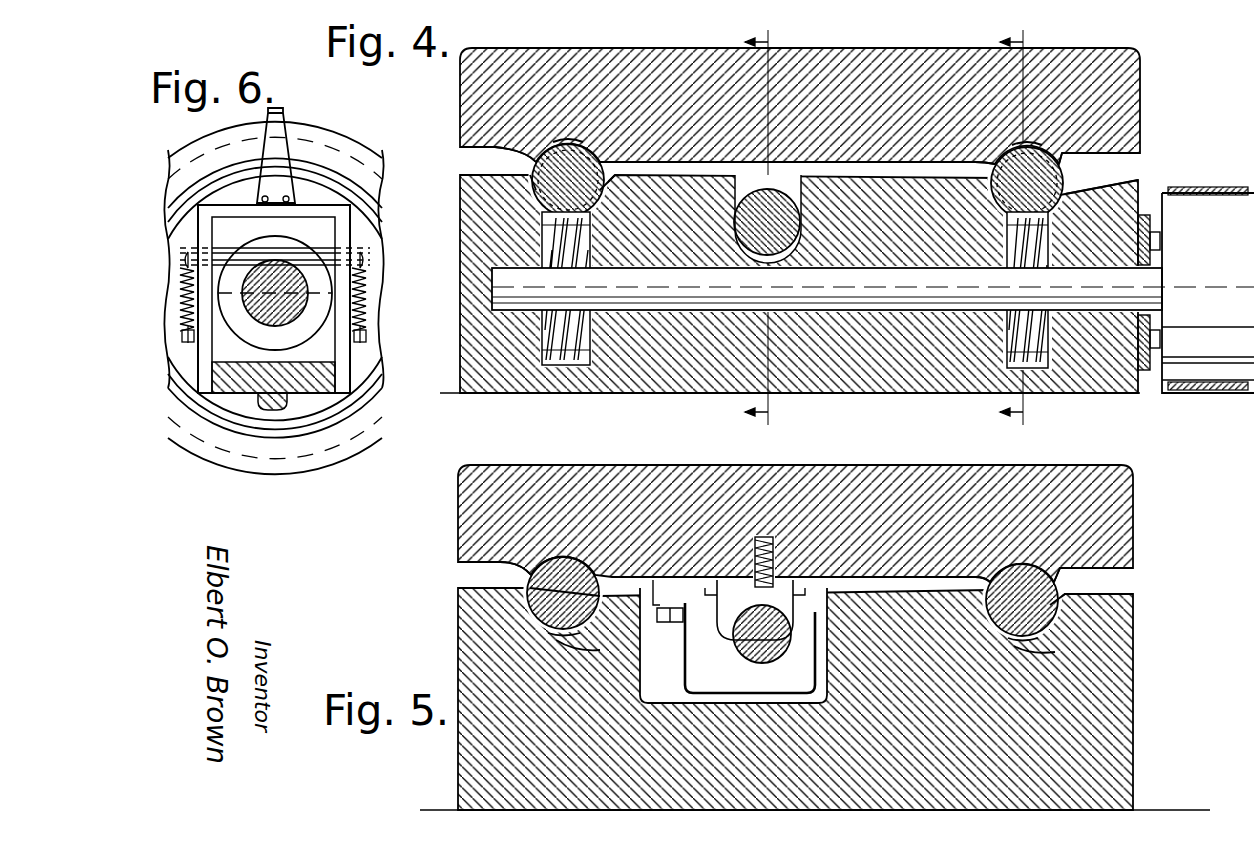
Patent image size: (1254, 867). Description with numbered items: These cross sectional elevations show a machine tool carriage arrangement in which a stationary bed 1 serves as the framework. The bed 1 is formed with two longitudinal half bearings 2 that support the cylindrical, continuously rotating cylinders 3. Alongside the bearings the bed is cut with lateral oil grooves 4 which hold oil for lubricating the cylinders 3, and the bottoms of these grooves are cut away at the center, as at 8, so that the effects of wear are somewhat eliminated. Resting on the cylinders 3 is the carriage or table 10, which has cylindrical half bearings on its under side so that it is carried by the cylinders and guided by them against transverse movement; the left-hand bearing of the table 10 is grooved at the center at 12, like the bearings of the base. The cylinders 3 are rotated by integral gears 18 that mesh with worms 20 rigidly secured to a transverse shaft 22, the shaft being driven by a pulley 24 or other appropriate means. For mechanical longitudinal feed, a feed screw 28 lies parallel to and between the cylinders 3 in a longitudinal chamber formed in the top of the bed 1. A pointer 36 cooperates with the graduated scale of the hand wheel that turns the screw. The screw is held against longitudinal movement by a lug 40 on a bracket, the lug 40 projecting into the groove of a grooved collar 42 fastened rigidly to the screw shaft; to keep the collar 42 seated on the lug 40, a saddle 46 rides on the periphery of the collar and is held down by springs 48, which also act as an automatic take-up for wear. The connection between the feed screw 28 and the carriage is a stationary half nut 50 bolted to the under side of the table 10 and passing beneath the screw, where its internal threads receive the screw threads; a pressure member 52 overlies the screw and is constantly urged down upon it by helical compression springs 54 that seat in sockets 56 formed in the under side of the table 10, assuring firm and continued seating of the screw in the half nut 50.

In FIG. 4, the bed 1 is at (905, 378).
In FIG. 5, the bed 1 is at (1115, 782).
In FIG. 4, the longitudinal half bearings 2 is at (1065, 200).
In FIG. 5, the longitudinal half bearings 2 is at (1063, 618).
In FIG. 4, the cylinders 3 is at (1048, 172).
In FIG. 5, the cylinders 3 is at (1045, 592).
In FIG. 4, the oil grooves 4 is at (1075, 185).
In FIG. 5, the oil grooves 4 is at (1072, 605).
In FIG. 5, the cut-away bottom of groove 8 is at (1035, 650).
In FIG. 4, the table 10 is at (663, 63).
In FIG. 5, the table 10 is at (1080, 483).
In FIG. 5, the groove 12 is at (565, 557).
In FIG. 4, the integral gears 18 is at (1050, 150).
In FIG. 4, the worms 20 is at (1008, 370).
In FIG. 4, the transverse shaft 22 is at (690, 288).
In FIG. 4, the pulley 24 is at (1237, 215).
In FIG. 4, the feed screw 28 is at (797, 192).
In FIG. 5, the feed screw 28 is at (775, 640).
In FIG. 6, the feed screw 28 is at (282, 312).
In FIG. 6, the pointer 36 is at (285, 132).
In FIG. 6, the lug 40 is at (322, 350).
In FIG. 6, the grooved collar 42 is at (255, 252).
In FIG. 6, the saddle 46 is at (355, 257).
In FIG. 6, the springs 48 is at (370, 308).
In FIG. 5, the half nut 50 is at (700, 660).
In FIG. 5, the pressure member 52 is at (780, 612).
In FIG. 5, the helical compression springs 54 is at (790, 560).
In FIG. 5, the sockets 56 is at (764, 537).